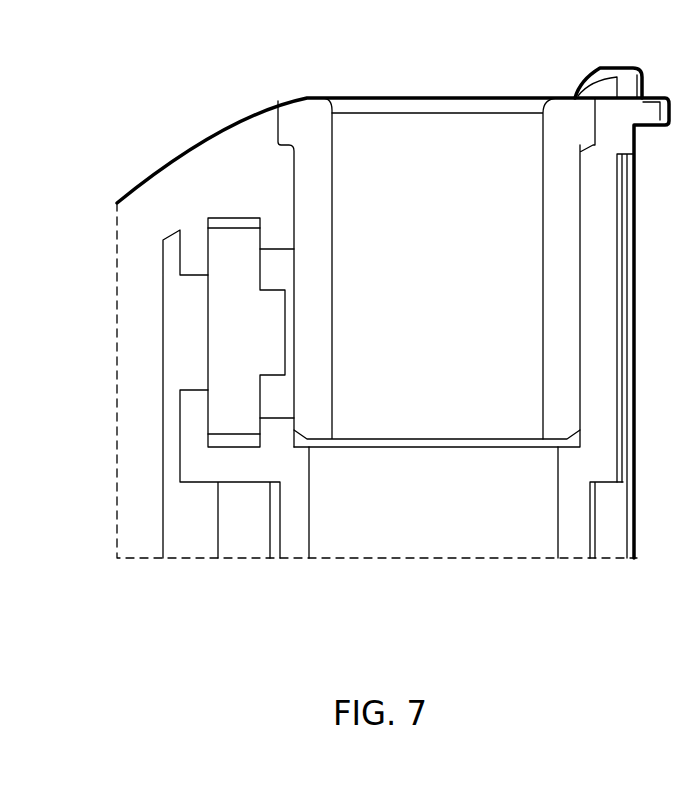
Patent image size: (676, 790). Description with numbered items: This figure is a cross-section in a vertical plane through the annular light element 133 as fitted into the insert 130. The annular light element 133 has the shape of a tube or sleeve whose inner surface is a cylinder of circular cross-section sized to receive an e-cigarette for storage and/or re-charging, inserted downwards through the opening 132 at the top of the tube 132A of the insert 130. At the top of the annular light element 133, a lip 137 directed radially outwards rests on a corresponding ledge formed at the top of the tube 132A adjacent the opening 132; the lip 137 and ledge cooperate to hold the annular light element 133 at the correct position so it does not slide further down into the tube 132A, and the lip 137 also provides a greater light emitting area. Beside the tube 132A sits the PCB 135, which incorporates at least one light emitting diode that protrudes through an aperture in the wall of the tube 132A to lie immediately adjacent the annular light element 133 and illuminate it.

The insert 130 is at (140, 328).
The opening 132 is at (430, 128).
The tube 132A is at (428, 523).
The annular light element 133 is at (325, 100).
The PCB 135 is at (240, 333).
The lip 137 is at (290, 130).